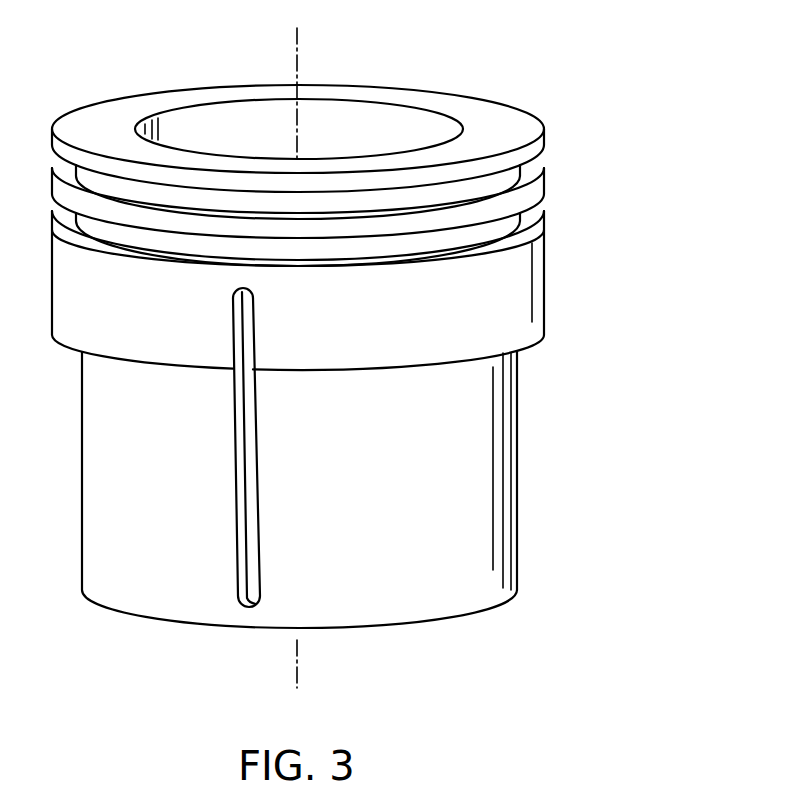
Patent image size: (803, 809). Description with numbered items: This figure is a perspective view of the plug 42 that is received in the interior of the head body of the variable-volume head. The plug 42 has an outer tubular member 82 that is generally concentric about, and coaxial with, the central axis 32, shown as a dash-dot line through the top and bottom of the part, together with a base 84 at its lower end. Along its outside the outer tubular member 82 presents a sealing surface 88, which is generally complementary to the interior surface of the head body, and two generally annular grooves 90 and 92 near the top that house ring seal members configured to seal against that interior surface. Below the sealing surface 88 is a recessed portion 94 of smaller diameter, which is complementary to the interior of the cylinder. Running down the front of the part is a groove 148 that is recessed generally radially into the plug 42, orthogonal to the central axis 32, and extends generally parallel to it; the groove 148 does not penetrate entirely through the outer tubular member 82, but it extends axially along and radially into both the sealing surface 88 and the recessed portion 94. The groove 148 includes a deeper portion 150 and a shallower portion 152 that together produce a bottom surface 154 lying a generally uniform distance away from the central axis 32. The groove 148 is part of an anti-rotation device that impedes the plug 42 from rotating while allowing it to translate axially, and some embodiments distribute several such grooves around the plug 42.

The central axis 32 is at (296, 52).
The plug 42 is at (566, 74).
The outer tubular member 82 is at (473, 96).
The base 84 is at (355, 627).
The sealing surface 88 is at (520, 333).
The annular groove 90 is at (543, 164).
The annular groove 92 is at (544, 218).
The recessed portion 94 is at (440, 607).
The groove 148 is at (263, 568).
The deeper portion 150 is at (255, 334).
The shallower portion 152 is at (262, 521).
The bottom surface 154 is at (256, 455).